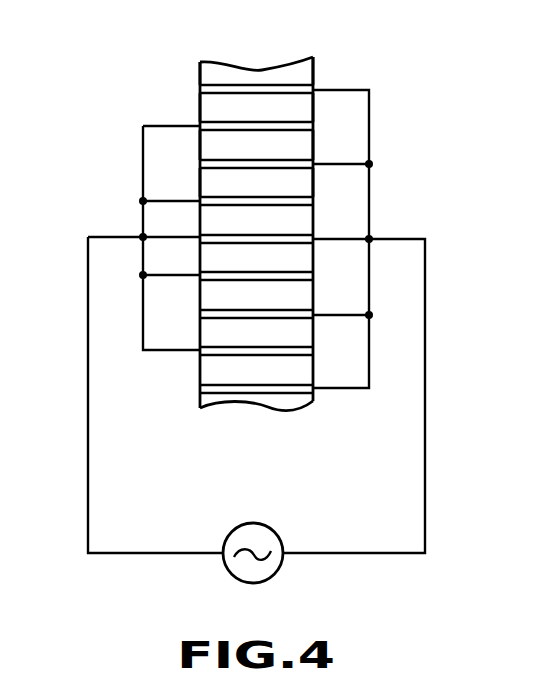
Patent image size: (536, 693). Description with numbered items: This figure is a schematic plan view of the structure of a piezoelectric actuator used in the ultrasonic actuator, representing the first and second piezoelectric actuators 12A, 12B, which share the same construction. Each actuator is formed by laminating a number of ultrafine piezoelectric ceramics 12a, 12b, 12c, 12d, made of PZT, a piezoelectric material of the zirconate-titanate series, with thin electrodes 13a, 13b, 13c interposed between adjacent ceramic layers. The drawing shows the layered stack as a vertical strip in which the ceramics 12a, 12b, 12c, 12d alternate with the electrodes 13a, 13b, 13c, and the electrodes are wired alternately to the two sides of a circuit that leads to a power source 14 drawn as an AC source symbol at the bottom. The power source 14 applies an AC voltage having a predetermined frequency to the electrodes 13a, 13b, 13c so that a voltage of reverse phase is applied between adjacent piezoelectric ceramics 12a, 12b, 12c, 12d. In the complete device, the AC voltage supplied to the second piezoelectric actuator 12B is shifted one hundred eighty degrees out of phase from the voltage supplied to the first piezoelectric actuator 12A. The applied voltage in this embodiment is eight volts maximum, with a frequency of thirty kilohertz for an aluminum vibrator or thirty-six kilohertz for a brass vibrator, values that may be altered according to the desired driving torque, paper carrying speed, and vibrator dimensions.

The first piezoelectric actuator 12A is at (357, 29).
The second piezoelectric actuator 12B is at (256, 234).
The piezoelectric ceramic 12a is at (305, 72).
The piezoelectric ceramic 12b is at (313, 108).
The piezoelectric ceramic 12c is at (313, 148).
The piezoelectric ceramic 12d is at (313, 185).
The electrode 13a is at (200, 85).
The electrode 13b is at (200, 125).
The electrode 13c is at (200, 163).
The power source 14 is at (280, 570).